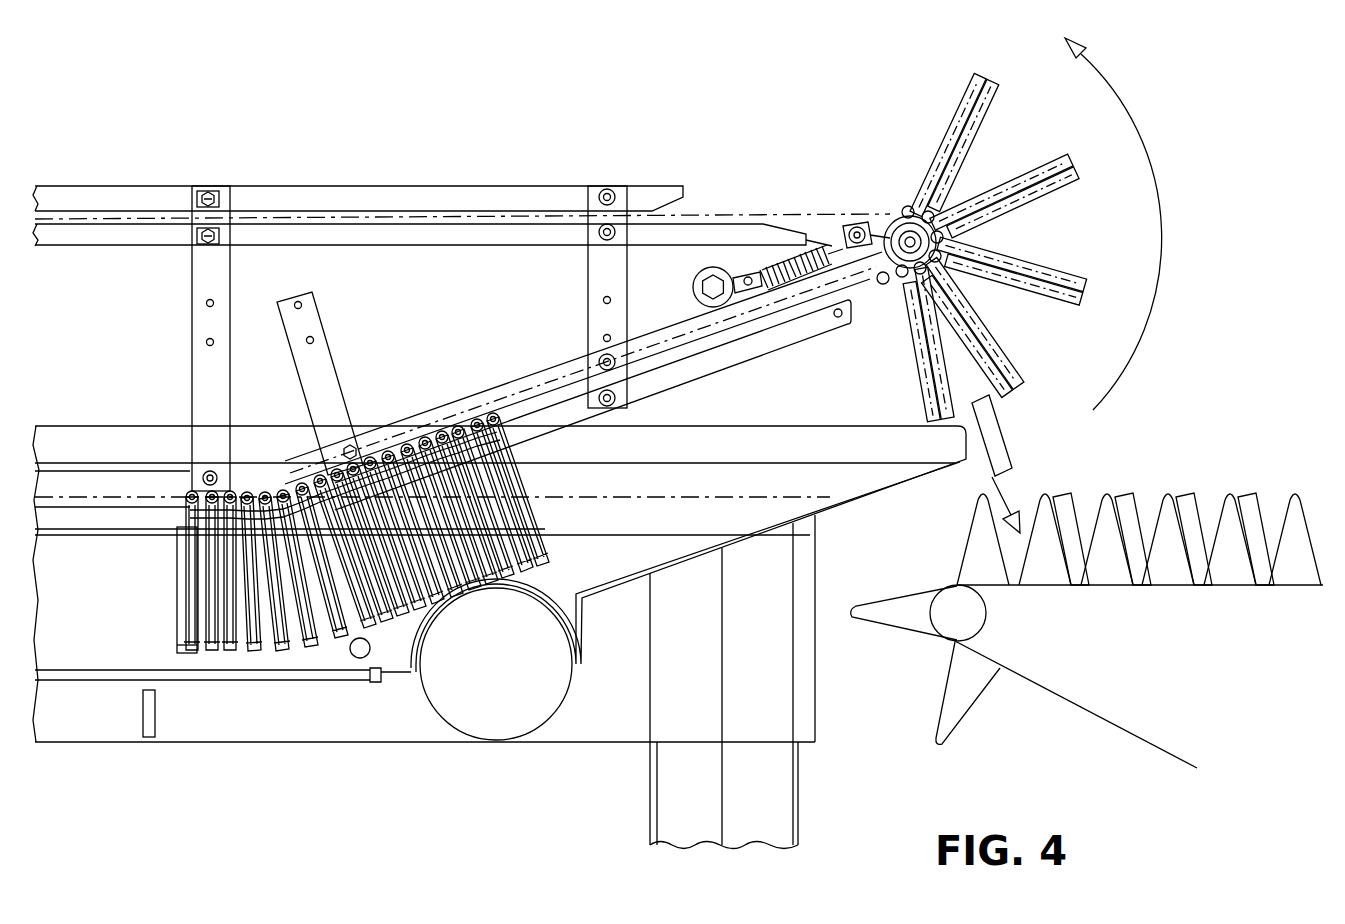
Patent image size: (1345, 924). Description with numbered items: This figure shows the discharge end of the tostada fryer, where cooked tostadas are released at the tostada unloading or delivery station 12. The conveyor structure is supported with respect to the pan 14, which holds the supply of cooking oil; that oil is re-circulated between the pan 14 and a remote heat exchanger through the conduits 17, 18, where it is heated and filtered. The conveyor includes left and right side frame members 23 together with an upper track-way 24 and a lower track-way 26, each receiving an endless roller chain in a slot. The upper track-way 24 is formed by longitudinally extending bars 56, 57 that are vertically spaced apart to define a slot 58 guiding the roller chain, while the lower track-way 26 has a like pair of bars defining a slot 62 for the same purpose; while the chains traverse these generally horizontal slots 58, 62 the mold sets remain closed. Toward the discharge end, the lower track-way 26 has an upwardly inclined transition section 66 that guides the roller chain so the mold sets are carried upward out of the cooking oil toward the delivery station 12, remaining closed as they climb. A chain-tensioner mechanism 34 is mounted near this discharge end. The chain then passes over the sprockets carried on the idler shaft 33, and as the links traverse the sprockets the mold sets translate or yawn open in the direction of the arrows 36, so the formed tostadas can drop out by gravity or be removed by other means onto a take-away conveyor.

The tostada unloading or delivery station 12 is at (1305, 530).
The pan 14 is at (146, 638).
The conduit 17 is at (362, 658).
The conduit 18 is at (550, 727).
The side frame member 23 is at (230, 302).
The upper track-way 24 is at (683, 212).
The lower track-way 26 is at (160, 480).
The idler shaft 33 is at (905, 225).
The chain-tensioner mechanism 34 is at (718, 300).
The arrows 36 is at (1145, 150).
The longitudinally extending bar 56 is at (548, 192).
The longitudinally extending bar 57 is at (470, 240).
The slot 58 is at (430, 214).
The slot 62 is at (640, 362).
The upwardly inclined transition section 66 is at (390, 440).